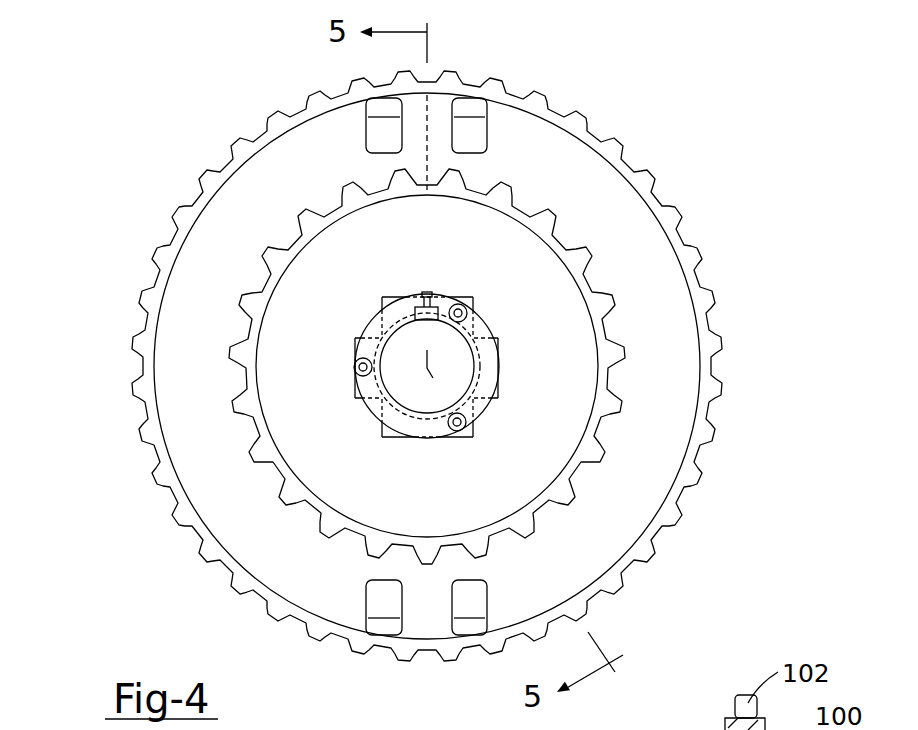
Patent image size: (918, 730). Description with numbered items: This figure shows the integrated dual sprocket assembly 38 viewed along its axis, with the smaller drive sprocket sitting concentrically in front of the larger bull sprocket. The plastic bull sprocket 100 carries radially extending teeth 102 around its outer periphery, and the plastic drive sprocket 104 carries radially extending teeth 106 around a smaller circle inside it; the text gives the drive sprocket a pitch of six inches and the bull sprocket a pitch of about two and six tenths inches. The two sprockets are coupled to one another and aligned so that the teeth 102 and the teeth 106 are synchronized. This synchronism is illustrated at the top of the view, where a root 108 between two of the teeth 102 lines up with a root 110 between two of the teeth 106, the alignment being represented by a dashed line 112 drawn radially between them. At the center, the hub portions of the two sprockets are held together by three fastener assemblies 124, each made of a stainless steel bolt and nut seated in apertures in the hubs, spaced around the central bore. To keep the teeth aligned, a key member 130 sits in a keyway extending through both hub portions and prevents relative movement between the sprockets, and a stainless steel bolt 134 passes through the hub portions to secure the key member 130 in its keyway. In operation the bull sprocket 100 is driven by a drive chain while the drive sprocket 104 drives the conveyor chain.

The integrated dual sprocket assembly 38 is at (720, 104).
The bull sprocket 100 is at (570, 160).
The teeth 102 is at (182, 215).
The drive sprocket 104 is at (556, 326).
The teeth 106 is at (597, 340).
The root 108 is at (434, 74).
The root 110 is at (414, 172).
The dashed line 112 is at (430, 133).
The fastener assemblies 124 is at (362, 367).
The key member 130 is at (413, 311).
The stainless steel bolt 134 is at (427, 290).